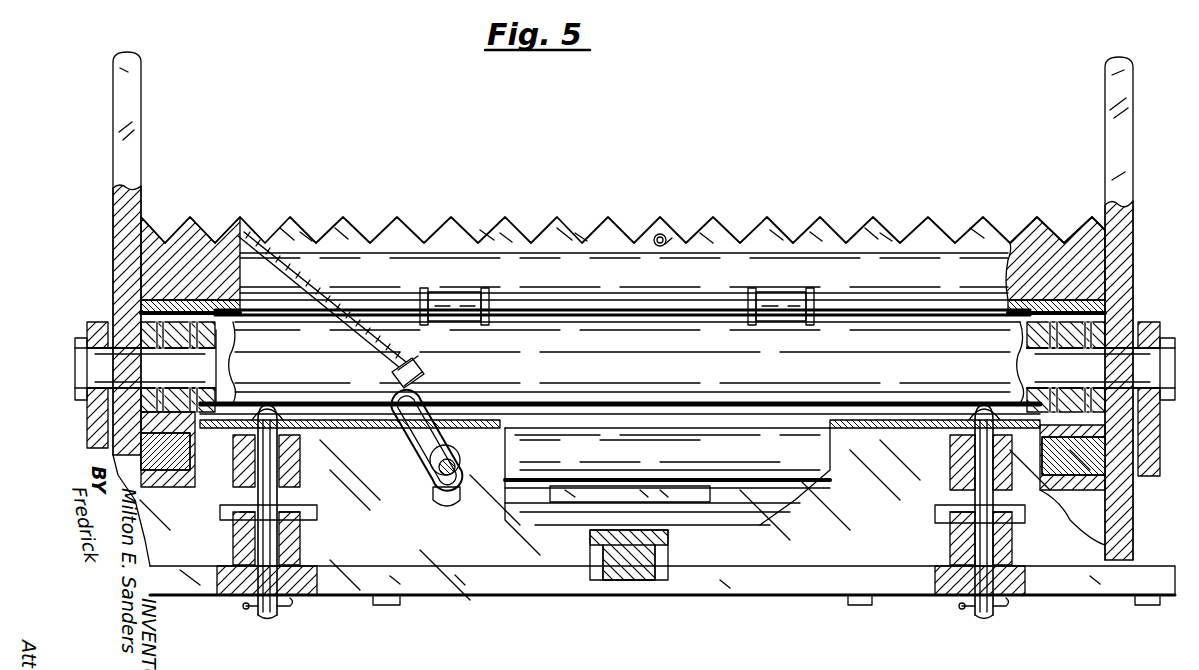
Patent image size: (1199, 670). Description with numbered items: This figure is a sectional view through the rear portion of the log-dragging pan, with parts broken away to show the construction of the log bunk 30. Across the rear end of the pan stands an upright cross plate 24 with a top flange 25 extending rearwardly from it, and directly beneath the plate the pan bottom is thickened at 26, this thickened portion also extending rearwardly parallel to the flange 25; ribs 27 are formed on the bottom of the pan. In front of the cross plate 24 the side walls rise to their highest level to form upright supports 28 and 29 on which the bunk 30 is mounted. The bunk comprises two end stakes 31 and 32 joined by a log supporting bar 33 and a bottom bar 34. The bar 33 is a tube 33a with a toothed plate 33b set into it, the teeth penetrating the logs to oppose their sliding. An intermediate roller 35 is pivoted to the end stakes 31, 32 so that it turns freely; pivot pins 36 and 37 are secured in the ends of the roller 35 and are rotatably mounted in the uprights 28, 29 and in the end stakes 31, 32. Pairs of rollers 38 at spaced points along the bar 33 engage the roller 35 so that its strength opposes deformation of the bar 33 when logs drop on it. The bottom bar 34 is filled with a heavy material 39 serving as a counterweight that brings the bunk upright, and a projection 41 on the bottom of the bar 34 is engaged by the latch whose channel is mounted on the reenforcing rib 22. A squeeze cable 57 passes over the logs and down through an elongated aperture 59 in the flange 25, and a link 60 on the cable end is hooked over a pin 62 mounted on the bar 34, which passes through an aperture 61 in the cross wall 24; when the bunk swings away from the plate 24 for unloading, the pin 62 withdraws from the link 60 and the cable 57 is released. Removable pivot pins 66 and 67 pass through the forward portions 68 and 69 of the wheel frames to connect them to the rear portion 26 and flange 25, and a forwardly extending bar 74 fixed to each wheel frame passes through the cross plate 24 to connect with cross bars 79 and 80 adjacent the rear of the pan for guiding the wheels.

The reenforcing rib 22 is at (629, 555).
The upright cross plate 24 is at (800, 560).
The top flange 25 is at (326, 430).
The thickened bottom portion 26 is at (425, 585).
The ribs 27 is at (375, 602).
The upright support 28 is at (88, 325).
The upright support 29 is at (1150, 322).
The log bunk 30 is at (1012, 194).
The end stake 31 is at (120, 177).
The end stake 32 is at (1112, 152).
The log supporting bar 33 is at (585, 268).
The tube 33a is at (400, 265).
The toothed plate 33b is at (455, 240).
The bottom bar 34 is at (728, 458).
The intermediate roller 35 is at (600, 367).
The pivot pin 36 is at (115, 363).
The pivot pin 37 is at (1040, 366).
The rollers 38 is at (455, 312).
The heavy material 39 is at (195, 436).
The projection 41 is at (600, 490).
The squeeze cable 57 is at (690, 235).
The aperture 59 is at (430, 428).
The link 60 is at (450, 395).
The aperture 61 is at (436, 507).
The pin 62 is at (432, 482).
The removable pivot pin 66 is at (265, 617).
The removable pivot pin 67 is at (978, 620).
The forward portion of wheel frame 68 is at (240, 463).
The forward portion of wheel frame 69 is at (955, 458).
The forwardly extending bar 74 is at (300, 514).
The cross bar 79 is at (722, 505).
The cross bar 80 is at (680, 525).